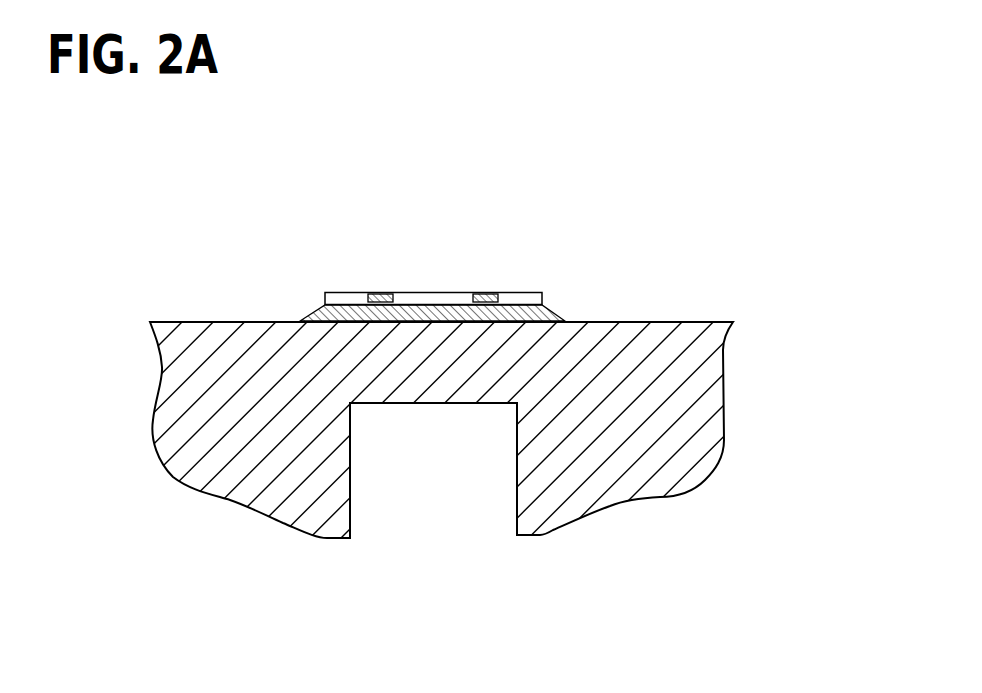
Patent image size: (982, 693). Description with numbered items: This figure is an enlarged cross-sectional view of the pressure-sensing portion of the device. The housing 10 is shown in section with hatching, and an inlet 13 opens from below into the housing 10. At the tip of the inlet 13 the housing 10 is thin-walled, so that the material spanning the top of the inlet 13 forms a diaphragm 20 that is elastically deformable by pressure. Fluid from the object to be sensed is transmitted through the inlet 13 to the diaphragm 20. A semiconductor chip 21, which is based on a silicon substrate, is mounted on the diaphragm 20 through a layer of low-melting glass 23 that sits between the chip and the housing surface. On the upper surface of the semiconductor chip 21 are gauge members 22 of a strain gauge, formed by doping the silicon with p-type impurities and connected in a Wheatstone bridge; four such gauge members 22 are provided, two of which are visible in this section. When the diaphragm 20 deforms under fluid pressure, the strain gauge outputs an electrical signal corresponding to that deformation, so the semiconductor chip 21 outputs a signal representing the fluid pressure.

The housing 10 is at (705, 383).
The inlet 13 is at (350, 450).
The diaphragm 20 is at (465, 375).
The semiconductor chip 21 is at (520, 292).
The gauge member 22 is at (375, 292).
The low-melting glass 23 is at (550, 308).